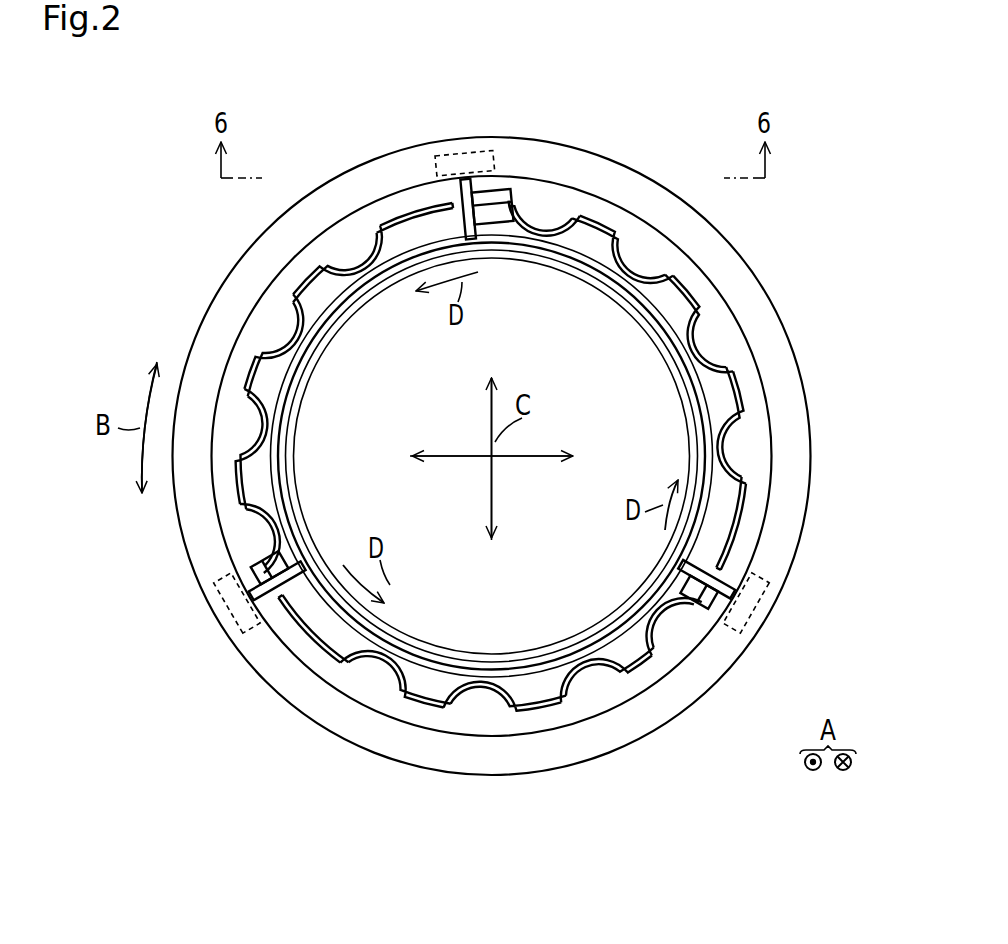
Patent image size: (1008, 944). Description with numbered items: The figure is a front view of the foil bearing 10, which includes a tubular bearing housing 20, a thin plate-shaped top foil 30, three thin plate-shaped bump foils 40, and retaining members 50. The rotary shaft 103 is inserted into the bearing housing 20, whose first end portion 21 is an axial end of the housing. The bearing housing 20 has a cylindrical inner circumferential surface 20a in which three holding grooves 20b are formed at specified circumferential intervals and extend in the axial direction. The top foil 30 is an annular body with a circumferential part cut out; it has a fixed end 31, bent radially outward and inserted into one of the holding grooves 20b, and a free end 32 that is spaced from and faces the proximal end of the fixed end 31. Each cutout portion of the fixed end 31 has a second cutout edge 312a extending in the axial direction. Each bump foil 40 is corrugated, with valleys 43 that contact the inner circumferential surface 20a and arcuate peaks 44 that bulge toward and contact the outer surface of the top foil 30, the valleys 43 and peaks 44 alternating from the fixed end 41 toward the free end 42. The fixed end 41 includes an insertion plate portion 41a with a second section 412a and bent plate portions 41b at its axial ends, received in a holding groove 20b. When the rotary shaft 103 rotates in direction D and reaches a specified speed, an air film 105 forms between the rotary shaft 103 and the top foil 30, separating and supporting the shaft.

The foil bearing 10 is at (601, 60).
The bearing housing 20 is at (546, 150).
The inner circumferential surface 20a is at (478, 722).
The holding groove 20b is at (494, 178).
The first end portion 21 is at (425, 768).
The top foil 30 is at (661, 324).
The fixed end 31 is at (455, 195).
The free end 32 is at (425, 215).
The bump foil 40 is at (497, 437).
The fixed end 41 is at (490, 402).
The insertion plate portion 41a is at (463, 180).
The bent plate portion 41b is at (515, 180).
The free end 42 is at (405, 210).
The valley 43 is at (325, 243).
The peak 44 is at (292, 336).
The retaining member 50 is at (611, 172).
The rotary shaft 103 is at (390, 215).
The air film 105 is at (744, 478).
The second cutout edge 312a is at (488, 235).
The second section 412a is at (478, 152).